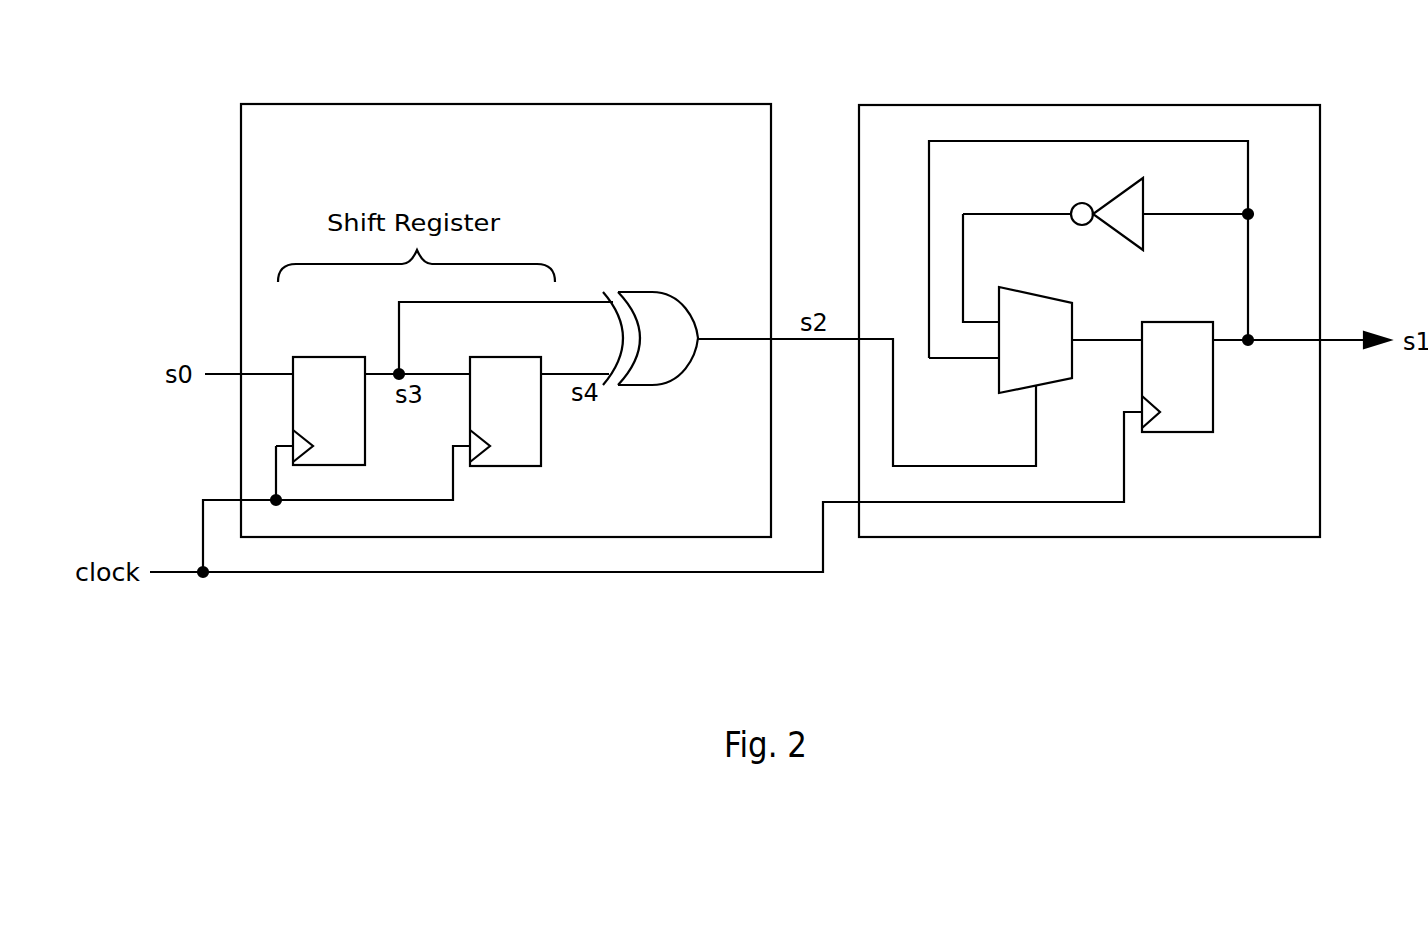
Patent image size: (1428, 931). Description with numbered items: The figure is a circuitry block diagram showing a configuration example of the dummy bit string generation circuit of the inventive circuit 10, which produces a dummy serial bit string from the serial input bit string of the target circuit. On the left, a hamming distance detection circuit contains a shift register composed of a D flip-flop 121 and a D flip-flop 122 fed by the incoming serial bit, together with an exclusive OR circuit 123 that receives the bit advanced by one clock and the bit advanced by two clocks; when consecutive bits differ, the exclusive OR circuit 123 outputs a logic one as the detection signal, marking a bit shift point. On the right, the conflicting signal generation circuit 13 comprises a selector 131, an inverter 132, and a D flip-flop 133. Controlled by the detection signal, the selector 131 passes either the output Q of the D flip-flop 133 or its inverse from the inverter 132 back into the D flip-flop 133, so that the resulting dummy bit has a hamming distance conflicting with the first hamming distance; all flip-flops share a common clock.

The inventive circuit 10 is at (506, 304).
The conflicting signal generation circuit 13 is at (1089, 304).
The D flip-flop 121 is at (329, 391).
The D flip-flop 122 is at (505, 392).
The exclusive OR circuit 123 is at (650, 320).
The selector 131 is at (1070, 325).
The inverter 132 is at (1105, 206).
The D flip-flop 133 is at (1177, 359).